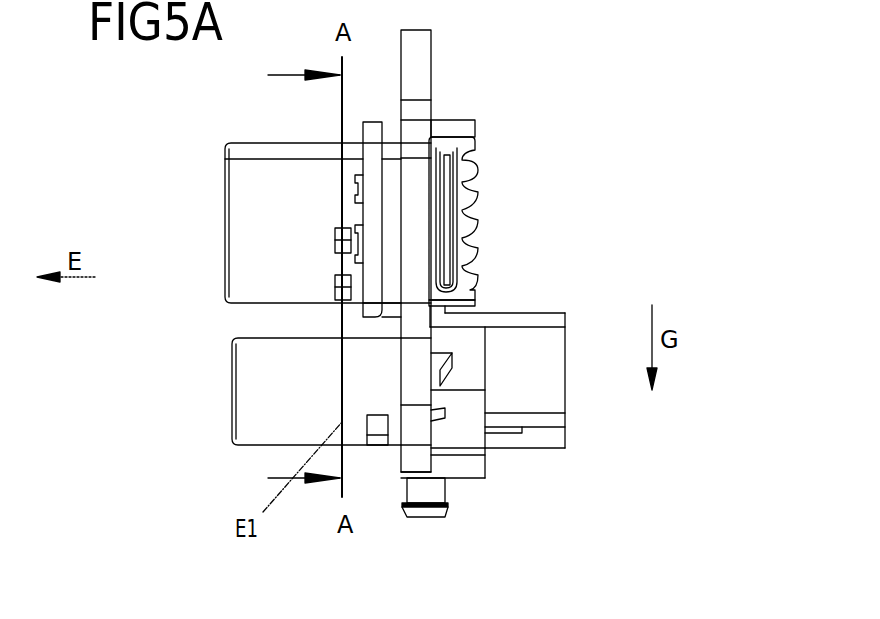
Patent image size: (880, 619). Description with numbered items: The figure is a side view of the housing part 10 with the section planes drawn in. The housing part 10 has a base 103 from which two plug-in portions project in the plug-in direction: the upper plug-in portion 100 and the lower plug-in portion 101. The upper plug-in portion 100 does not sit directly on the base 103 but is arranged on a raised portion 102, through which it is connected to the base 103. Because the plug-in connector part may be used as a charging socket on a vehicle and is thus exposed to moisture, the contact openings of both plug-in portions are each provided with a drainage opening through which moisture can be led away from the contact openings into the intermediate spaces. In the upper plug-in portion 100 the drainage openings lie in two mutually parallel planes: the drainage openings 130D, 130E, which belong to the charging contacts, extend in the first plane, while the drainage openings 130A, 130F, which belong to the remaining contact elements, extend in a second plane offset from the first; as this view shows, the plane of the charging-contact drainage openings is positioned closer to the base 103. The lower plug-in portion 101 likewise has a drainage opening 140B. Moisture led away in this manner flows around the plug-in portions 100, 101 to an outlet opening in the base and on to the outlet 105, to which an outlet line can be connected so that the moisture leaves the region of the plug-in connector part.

The housing part 10 is at (506, 66).
The upper plug-in portion 100 is at (248, 273).
The lower plug-in portion 101 is at (252, 433).
The raised portion 102 is at (373, 133).
The base 103 is at (401, 70).
The outlet 105 is at (430, 512).
The drainage opening 130A is at (368, 240).
The drainage opening 130D is at (335, 300).
The drainage opening 130E is at (335, 244).
The drainage opening 130F is at (368, 190).
The drainage opening 140B is at (380, 447).